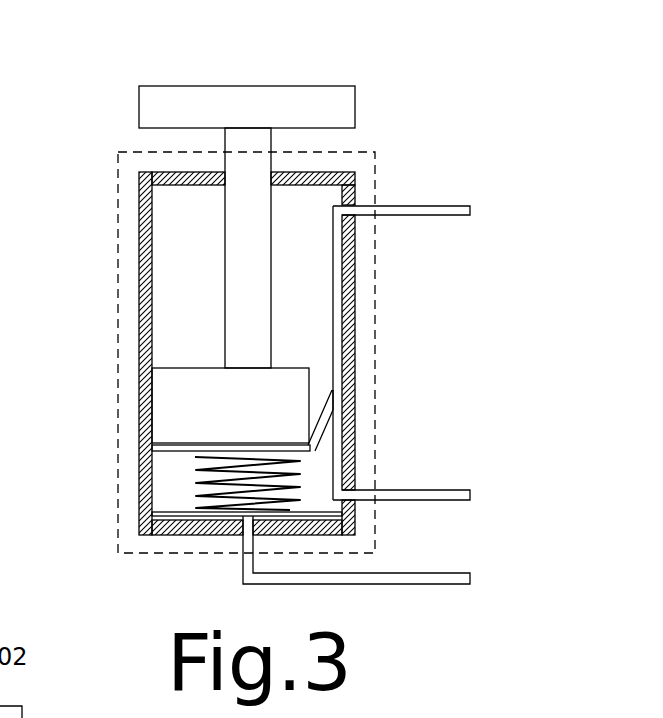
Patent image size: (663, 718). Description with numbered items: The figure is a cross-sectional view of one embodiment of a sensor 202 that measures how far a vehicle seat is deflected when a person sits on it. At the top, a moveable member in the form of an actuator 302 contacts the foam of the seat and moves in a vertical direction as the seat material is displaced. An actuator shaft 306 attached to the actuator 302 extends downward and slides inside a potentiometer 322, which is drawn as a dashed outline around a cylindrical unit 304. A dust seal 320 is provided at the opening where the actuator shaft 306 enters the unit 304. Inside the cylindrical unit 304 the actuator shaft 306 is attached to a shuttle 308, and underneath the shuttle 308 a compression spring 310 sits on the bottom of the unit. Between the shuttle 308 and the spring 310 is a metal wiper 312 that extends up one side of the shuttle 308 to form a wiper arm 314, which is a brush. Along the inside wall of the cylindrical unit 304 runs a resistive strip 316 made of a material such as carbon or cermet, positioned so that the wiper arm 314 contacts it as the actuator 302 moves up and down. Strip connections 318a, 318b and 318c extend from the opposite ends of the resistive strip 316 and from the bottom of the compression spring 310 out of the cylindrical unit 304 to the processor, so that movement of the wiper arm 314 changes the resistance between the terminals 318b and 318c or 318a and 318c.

The sensor 202 is at (198, 67).
The actuator 302 is at (318, 86).
The cylindrical unit 304 is at (140, 252).
The actuator shaft 306 is at (250, 133).
The shuttle 308 is at (173, 407).
The compression spring 310 is at (195, 483).
The metal wiper 312 is at (290, 450).
The wiper arm 314 is at (325, 426).
The resistive strip 316 is at (333, 255).
The strip connection 318a is at (437, 206).
The strip connection 318b is at (437, 491).
The strip connection 318c is at (438, 573).
The dust seal 320 is at (273, 163).
The potentiometer 322 is at (375, 303).